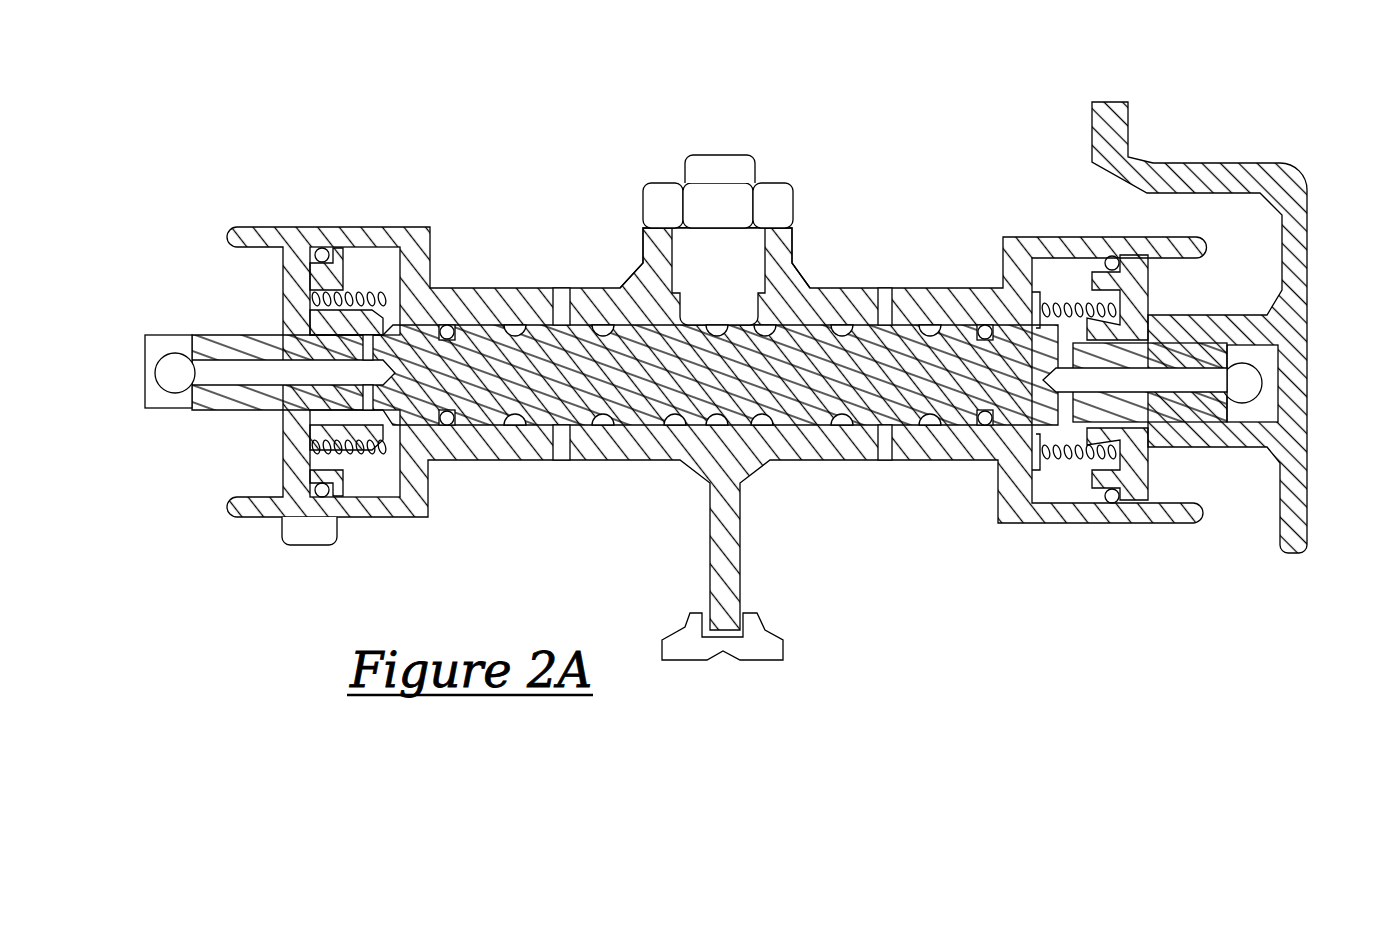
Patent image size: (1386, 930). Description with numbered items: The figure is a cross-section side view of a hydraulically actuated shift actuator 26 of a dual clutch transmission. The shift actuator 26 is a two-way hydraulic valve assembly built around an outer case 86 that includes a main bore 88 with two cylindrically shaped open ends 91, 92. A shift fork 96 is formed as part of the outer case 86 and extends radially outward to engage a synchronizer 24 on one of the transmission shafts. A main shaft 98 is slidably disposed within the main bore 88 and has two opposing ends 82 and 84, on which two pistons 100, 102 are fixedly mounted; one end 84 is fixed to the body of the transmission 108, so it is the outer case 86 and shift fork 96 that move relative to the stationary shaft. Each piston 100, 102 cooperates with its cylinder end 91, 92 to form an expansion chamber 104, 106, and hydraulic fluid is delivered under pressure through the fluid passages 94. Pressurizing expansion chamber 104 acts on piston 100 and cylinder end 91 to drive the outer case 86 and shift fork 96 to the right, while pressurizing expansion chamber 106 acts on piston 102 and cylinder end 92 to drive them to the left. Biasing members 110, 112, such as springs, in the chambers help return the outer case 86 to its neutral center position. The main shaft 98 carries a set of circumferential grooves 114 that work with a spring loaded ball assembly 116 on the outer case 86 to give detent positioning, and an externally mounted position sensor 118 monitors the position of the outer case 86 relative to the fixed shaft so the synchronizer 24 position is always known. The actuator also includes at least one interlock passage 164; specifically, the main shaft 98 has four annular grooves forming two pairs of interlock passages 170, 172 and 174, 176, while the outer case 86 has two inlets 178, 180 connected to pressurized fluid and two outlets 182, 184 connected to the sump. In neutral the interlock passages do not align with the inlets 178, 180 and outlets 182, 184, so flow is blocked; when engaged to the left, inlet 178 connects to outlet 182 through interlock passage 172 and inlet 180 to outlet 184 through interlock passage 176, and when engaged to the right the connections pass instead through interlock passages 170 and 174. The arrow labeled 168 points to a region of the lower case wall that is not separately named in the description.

The shift actuator 26 is at (460, 188).
The interlock passage 164 is at (553, 230).
The lower housing portion 168 is at (528, 516).
The inlet 178 is at (562, 290).
The inlet 180 is at (886, 287).
The interlock passage 170 is at (530, 432).
The interlock passage 176 is at (878, 440).
The interlock passage 172 is at (614, 432).
The interlock passage 174 is at (832, 425).
The outlet 182 is at (567, 460).
The outlet 184 is at (912, 432).
The circumferential grooves 114 is at (641, 266).
The spring loaded ball assembly 116 is at (753, 258).
The main shaft 98 is at (960, 330).
The main bore 88 is at (975, 430).
The body of the transmission 108 is at (1100, 145).
The end of main shaft 84 is at (1292, 462).
The piston 102 is at (1143, 283).
The biasing member 112 is at (1135, 468).
The expansion chamber 106 is at (1060, 490).
The cylindrically shaped open end 92 is at (1187, 493).
The piston 100 is at (293, 287).
The expansion chamber 104 is at (386, 490).
The biasing member 110 is at (360, 452).
The end of main shaft 82 is at (268, 404).
The fluid passages 94 is at (165, 378).
The shift fork 96 is at (740, 565).
The synchronizer 24 is at (774, 641).
The cylindrically shaped open end 91 is at (265, 497).
The position sensor 118 is at (296, 537).
The outer case 86 is at (508, 460).